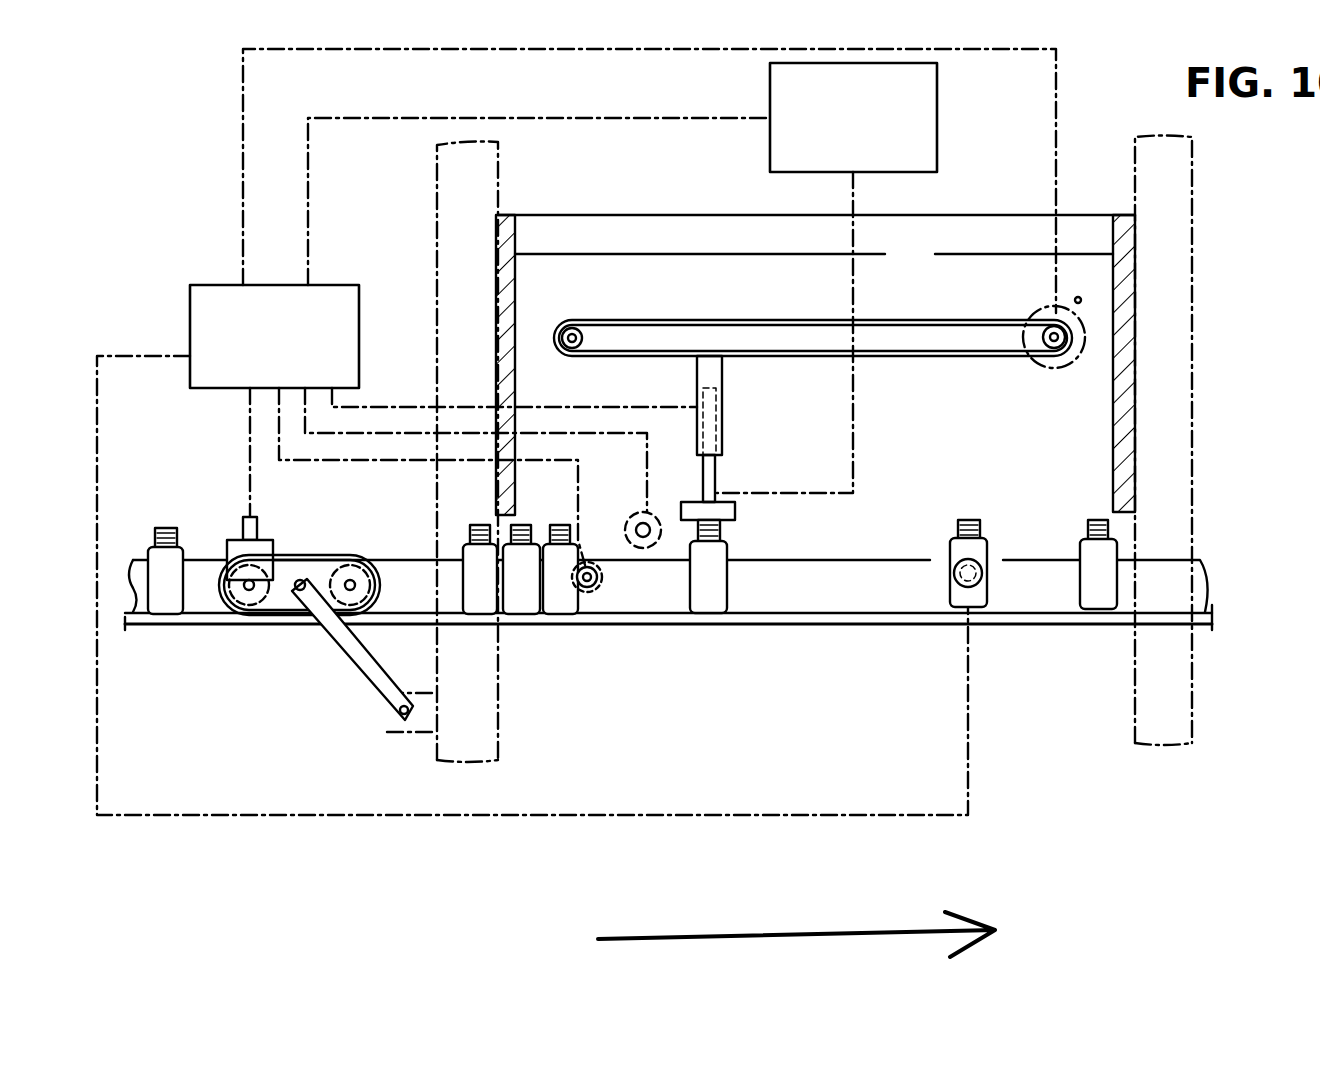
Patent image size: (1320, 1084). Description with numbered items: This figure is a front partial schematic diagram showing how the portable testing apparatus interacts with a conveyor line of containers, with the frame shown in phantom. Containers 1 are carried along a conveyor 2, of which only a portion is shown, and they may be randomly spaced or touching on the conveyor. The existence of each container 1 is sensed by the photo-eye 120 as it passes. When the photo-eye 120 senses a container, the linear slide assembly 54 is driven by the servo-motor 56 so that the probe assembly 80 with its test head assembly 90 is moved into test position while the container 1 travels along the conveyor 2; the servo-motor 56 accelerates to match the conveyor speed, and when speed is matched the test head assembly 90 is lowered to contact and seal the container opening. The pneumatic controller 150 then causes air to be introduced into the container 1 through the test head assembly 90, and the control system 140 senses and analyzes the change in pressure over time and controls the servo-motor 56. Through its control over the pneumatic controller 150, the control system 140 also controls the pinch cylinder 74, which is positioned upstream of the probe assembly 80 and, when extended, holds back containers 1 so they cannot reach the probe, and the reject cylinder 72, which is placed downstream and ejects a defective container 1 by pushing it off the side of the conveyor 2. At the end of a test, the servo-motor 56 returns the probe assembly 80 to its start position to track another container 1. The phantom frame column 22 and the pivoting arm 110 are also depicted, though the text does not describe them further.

The container 1 is at (168, 568).
The conveyor 2 is at (200, 630).
The frame column 22 is at (1196, 382).
The linear slide assembly 54 is at (1000, 355).
The servo-motor 56 is at (1095, 300).
The reject cylinder 72 is at (930, 560).
The pinch cylinder 74 is at (600, 582).
The probe assembly 80 is at (741, 477).
The test head assembly 90 is at (735, 508).
The pivot arm 110 is at (290, 612).
The photo-eye 120 is at (650, 548).
The control system 140 is at (330, 298).
The pneumatic controller 150 is at (937, 110).